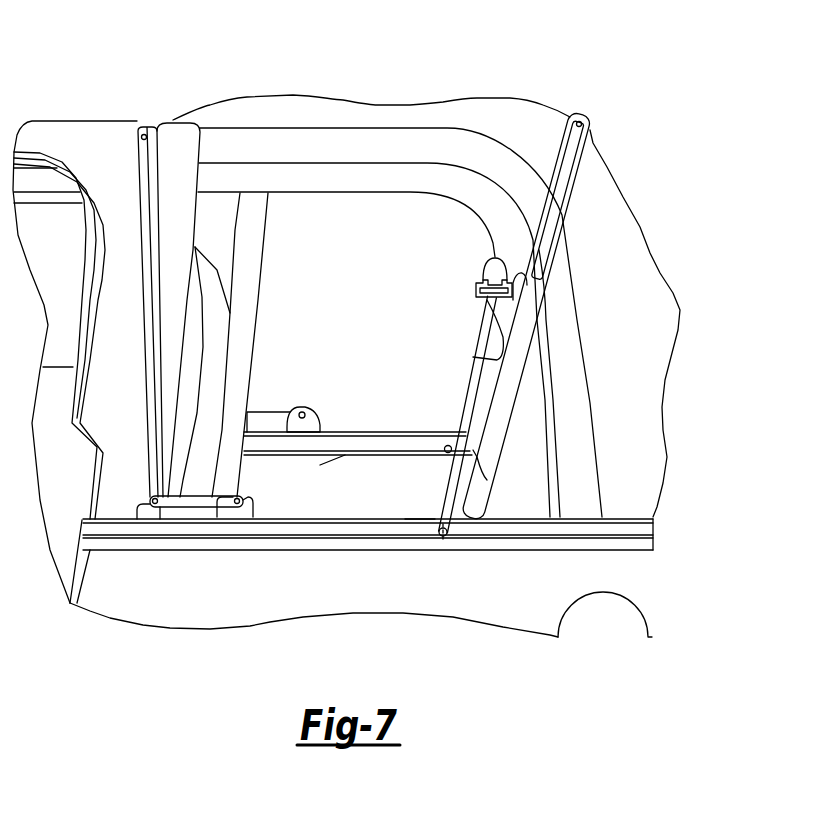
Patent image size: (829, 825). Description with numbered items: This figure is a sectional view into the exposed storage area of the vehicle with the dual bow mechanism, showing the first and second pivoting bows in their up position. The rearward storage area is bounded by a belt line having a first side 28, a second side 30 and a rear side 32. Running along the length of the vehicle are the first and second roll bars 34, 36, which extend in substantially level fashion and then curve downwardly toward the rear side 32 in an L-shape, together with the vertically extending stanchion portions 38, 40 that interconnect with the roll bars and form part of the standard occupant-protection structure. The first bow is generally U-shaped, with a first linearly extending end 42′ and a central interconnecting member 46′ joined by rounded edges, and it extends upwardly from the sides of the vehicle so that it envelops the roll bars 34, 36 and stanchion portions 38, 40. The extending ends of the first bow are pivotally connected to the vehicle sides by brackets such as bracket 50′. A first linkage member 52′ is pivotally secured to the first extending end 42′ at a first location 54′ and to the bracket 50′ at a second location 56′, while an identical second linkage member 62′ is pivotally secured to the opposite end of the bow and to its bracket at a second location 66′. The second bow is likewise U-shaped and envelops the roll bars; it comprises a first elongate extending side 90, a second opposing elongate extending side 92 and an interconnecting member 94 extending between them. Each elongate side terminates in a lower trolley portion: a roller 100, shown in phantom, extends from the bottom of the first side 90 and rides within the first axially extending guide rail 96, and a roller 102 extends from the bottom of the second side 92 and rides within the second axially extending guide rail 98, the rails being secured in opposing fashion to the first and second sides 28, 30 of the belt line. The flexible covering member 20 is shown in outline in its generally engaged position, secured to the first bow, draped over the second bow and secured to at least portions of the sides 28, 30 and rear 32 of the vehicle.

The flexible covering member 20 is at (282, 93).
The first side 28 is at (356, 588).
The second side 30 is at (444, 491).
The rear side 32 is at (653, 517).
The first roll bar 34 is at (397, 140).
The second roll bar 36 is at (397, 187).
The stanchion portion 38 is at (177, 148).
The stanchion portion 40 is at (260, 247).
The first linearly extending end 42′ is at (143, 370).
The central interconnecting member 46′ is at (153, 118).
The bracket 50′ is at (320, 420).
The first linkage member 52′ is at (195, 500).
The first location 54′ is at (153, 501).
The second location 56′ is at (238, 504).
The second linkage member 62′ is at (267, 410).
The second location 66′ is at (302, 410).
The first elongate extending side 90 is at (473, 452).
The second elongate extending side 92 is at (467, 400).
The interconnecting member 94 is at (590, 121).
The first guide rail 96 is at (412, 507).
The second guide rail 98 is at (328, 462).
The roller 100 is at (443, 538).
The roller 102 is at (443, 447).